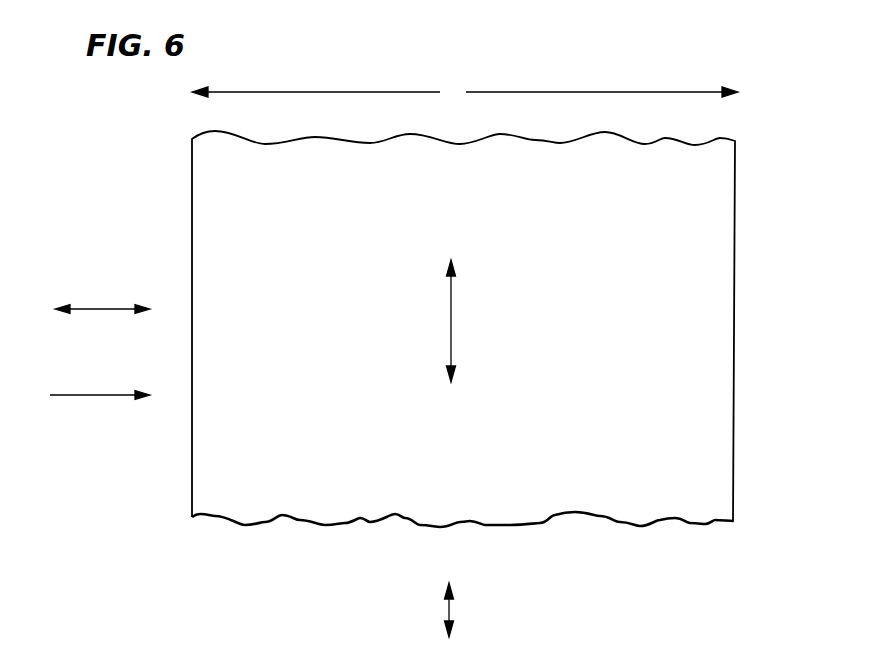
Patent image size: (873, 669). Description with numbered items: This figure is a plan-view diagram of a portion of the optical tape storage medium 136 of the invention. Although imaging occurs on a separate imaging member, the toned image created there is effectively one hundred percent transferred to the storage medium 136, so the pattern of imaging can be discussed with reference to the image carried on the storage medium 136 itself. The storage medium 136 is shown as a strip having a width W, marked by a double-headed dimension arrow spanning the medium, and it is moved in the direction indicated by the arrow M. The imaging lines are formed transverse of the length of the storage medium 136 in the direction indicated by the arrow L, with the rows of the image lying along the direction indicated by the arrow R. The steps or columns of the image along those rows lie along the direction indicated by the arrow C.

The storage medium 136 is at (733, 348).
The width W is at (465, 92).
The row direction arrow R is at (100, 308).
The imaging line direction arrow L is at (102, 394).
The movement direction arrow M is at (452, 325).
The column direction arrow C is at (450, 610).